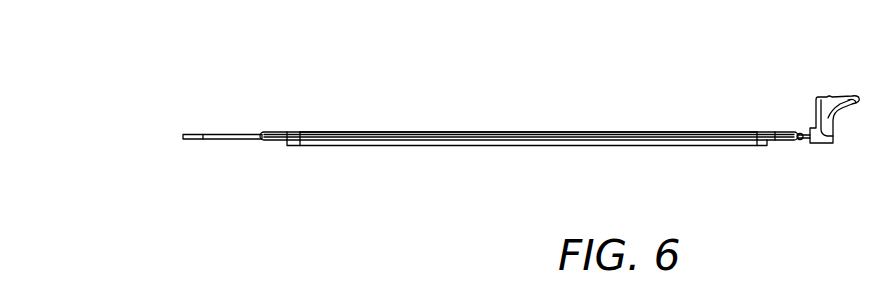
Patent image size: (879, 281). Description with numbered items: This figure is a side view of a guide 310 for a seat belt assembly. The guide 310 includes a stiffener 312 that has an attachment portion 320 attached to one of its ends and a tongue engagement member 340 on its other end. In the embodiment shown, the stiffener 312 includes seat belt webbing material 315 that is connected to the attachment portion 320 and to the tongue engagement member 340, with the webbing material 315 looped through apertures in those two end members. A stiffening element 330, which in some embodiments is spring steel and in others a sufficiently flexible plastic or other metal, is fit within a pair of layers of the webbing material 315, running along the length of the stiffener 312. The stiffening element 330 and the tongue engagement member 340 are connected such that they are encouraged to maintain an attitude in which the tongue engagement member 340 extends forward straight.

The guide 310 is at (507, 102).
The stiffener 312 is at (400, 93).
The seat belt webbing material 315 is at (712, 132).
The attachment portion 320 is at (223, 133).
The stiffening element 330 is at (437, 136).
The tongue engagement member 340 is at (830, 98).